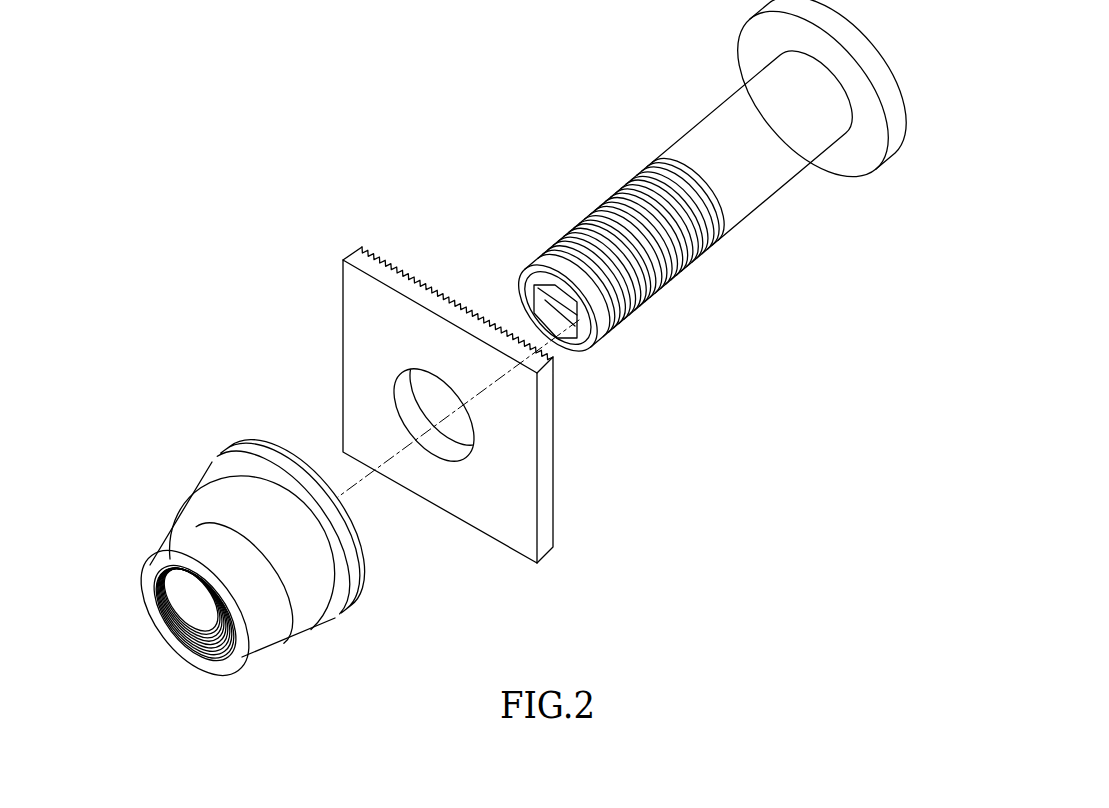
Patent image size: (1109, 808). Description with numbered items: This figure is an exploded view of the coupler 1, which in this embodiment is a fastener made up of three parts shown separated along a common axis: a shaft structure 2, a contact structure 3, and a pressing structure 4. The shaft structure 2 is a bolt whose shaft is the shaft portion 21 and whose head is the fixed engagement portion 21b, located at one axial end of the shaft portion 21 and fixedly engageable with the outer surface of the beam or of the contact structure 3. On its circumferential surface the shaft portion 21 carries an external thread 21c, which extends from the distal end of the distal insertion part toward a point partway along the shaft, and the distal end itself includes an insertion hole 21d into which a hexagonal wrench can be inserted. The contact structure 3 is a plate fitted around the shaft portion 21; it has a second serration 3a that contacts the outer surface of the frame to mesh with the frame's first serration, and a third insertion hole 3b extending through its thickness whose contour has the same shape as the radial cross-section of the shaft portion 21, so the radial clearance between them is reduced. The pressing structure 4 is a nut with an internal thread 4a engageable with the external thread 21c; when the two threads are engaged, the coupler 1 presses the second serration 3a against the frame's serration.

The coupler 1 is at (343, 91).
The shaft structure 2 is at (916, 205).
The shaft portion 21 is at (768, 183).
The fixed engagement portion 21b is at (820, 167).
The external thread 21c is at (660, 273).
The insertion hole 21d is at (568, 328).
The contact structure 3 is at (548, 475).
The second serration 3a is at (446, 292).
The third insertion hole 3b is at (437, 444).
The pressing structure 4 is at (256, 484).
The internal thread 4a is at (160, 598).